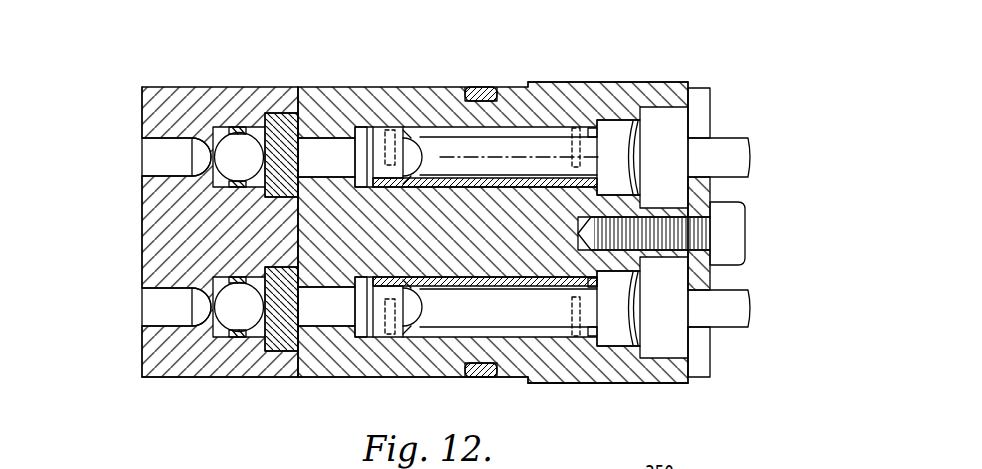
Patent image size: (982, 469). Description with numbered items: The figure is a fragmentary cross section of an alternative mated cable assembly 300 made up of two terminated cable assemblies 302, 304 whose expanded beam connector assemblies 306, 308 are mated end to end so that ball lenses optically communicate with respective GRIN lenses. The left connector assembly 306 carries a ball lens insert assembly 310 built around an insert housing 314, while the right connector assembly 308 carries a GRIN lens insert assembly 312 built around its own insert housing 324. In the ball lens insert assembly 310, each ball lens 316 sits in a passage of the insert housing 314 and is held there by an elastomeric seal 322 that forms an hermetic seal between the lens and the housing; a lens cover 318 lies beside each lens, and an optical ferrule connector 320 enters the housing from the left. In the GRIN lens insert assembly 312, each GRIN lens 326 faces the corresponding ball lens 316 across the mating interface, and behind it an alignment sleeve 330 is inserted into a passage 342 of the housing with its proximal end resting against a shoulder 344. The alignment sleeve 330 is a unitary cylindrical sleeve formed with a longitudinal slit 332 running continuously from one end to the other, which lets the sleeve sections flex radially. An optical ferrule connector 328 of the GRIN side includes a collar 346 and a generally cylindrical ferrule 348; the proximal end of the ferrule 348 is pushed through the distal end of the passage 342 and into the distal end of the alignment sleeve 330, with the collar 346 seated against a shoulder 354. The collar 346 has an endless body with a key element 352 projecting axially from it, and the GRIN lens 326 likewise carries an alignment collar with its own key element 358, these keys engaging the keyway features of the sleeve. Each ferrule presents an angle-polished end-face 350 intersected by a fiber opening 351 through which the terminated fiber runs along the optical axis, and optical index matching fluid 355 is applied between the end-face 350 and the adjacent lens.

The mated cable assembly 300 is at (142, 64).
The terminated cable assembly 302 is at (177, 80).
The expanded beam connector assembly 306 is at (178, 72).
The terminated cable assembly 304 is at (588, 52).
The expanded beam connector assembly 308 is at (594, 46).
The ball lens insert assembly 310 is at (160, 378).
The insert housing 314 is at (160, 378).
The GRIN lens insert assembly 312 is at (622, 383).
The insert housing 324 is at (622, 383).
The ball lens 316 is at (224, 170).
The lens cover 318 is at (283, 113).
The optical ferrule connector 320 is at (165, 158).
The elastomeric seal 322 is at (237, 127).
The GRIN lens 326 is at (322, 148).
The optical ferrule connector 328 is at (522, 140).
The alignment sleeve 330 is at (447, 135).
The longitudinal slit 332 is at (430, 180).
The passage 342 is at (562, 130).
The shoulder 344 is at (368, 130).
The collar 346 is at (620, 145).
The ferrule 348 is at (548, 138).
The angle-polished end-face 350 is at (410, 308).
The fiber opening 351 is at (497, 157).
The key element 352 is at (597, 132).
The shoulder 354 is at (598, 193).
The optical index matching fluid 355 is at (408, 150).
The key element 358 is at (361, 150).